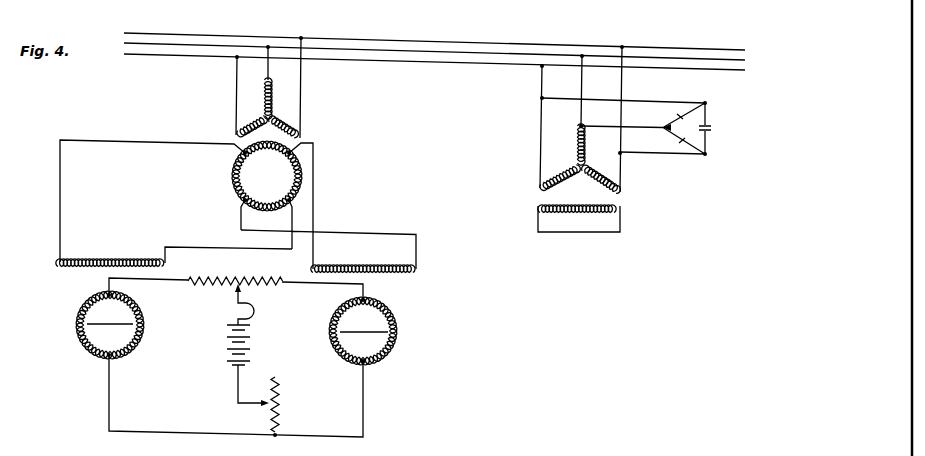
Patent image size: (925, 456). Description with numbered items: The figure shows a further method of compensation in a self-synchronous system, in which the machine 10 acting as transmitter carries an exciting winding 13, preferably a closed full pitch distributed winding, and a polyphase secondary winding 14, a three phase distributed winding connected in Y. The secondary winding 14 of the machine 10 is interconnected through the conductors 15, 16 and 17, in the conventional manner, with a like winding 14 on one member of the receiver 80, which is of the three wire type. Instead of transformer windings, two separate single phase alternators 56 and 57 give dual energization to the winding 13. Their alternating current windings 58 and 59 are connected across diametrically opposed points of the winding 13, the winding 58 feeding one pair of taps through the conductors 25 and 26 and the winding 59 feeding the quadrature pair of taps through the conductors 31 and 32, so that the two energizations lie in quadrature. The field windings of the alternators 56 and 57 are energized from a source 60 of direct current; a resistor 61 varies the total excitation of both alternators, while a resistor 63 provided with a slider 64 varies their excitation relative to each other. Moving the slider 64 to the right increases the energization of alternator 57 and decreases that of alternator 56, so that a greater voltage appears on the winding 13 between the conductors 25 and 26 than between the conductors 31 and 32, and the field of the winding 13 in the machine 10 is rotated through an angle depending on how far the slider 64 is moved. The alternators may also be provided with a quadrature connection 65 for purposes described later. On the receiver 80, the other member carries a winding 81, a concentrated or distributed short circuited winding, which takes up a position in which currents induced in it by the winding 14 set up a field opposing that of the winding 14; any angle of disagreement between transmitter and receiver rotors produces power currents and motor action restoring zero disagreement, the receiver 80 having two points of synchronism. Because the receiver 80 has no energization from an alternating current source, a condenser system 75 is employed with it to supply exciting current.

The machine 10 is at (245, 160).
The exciting winding 13 is at (302, 143).
The polyphase secondary winding 14 is at (271, 96).
The conductor 15 is at (416, 59).
The conductor 16 is at (455, 52).
The conductor 17 is at (503, 34).
The conductor 25 is at (241, 218).
The conductor 26 is at (314, 175).
The conductor 31 is at (292, 222).
The conductor 32 is at (117, 142).
The single phase alternator 56 is at (225, 356).
The single phase alternator 57 is at (391, 288).
The alternating current winding 58 is at (118, 258).
The alternating current winding 59 is at (362, 268).
The source of direct current 60 is at (252, 347).
The resistor 61 is at (283, 402).
The resistor 63 is at (233, 278).
The slider 64 is at (234, 297).
The quadrature connection 65 is at (117, 326).
The condenser system 75 is at (707, 131).
The receiver 80 is at (631, 213).
The winding 81 is at (600, 214).